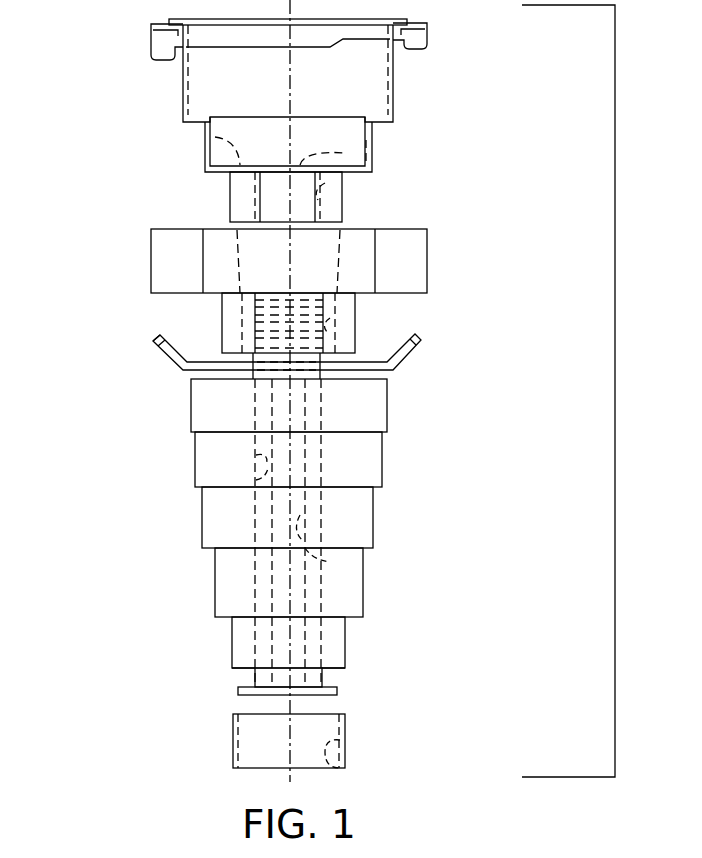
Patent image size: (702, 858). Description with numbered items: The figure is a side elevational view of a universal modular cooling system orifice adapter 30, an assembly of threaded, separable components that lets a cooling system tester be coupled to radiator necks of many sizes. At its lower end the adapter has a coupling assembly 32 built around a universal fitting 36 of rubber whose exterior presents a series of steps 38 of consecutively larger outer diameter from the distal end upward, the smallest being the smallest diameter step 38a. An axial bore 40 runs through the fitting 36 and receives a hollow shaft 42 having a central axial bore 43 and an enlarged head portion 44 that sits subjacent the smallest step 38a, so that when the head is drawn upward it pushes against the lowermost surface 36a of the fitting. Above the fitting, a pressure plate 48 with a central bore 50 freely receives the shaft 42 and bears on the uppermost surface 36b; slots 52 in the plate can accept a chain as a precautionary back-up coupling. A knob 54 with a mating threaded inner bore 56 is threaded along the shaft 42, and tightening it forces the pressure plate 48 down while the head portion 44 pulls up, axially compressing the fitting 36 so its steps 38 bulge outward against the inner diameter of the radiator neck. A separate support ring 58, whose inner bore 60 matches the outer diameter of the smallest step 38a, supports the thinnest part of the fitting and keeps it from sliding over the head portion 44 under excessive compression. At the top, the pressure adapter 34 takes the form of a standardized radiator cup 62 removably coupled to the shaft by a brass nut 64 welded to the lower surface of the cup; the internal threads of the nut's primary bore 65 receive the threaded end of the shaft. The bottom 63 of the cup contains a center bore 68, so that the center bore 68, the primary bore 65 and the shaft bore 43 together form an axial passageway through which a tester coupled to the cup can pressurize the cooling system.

The universal modular cooling system orifice adapter 30 is at (615, 393).
The coupling assembly 32 is at (311, 526).
The pressure adapter 34 is at (301, 120).
The universal fitting 36 is at (202, 533).
The lowermost surface of universal fitting 36a is at (345, 668).
The uppermost surface of universal fitting 36b is at (360, 375).
The steps 38 is at (363, 593).
The smallest diameter step 38a is at (345, 637).
The bore 40 is at (202, 488).
The hollow shaft 42 is at (253, 675).
The central axial bore 43 is at (330, 563).
The enlarged head portion 44 is at (237, 693).
The pressure plate 48 is at (165, 357).
The central bore 50 is at (355, 318).
The slots 52 is at (150, 330).
The knob 54 is at (150, 248).
The threaded inner bore 56 is at (353, 338).
The support ring 58 is at (357, 760).
The inner bore 60 is at (335, 775).
The radiator cup 62 is at (180, 92).
The bottom of radiator cup 63 is at (210, 140).
The brass nut 64 is at (230, 193).
The primary bore 65 is at (343, 200).
The center bore 68 is at (372, 165).